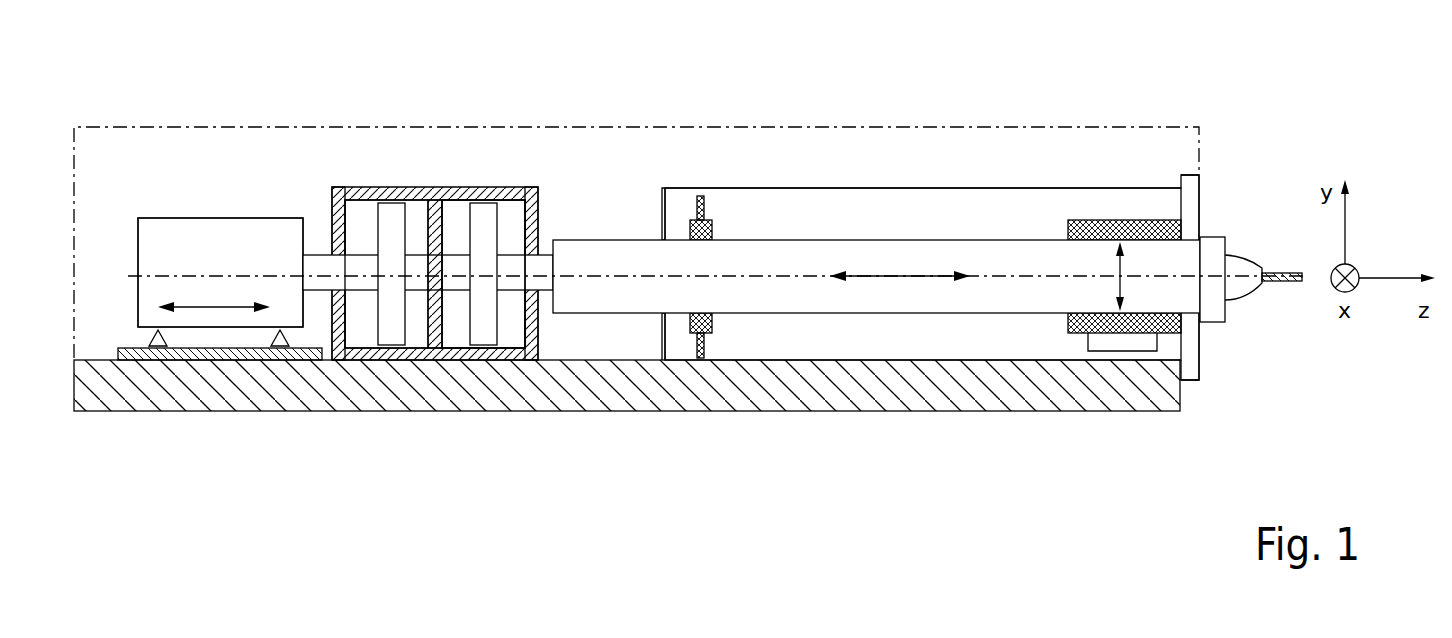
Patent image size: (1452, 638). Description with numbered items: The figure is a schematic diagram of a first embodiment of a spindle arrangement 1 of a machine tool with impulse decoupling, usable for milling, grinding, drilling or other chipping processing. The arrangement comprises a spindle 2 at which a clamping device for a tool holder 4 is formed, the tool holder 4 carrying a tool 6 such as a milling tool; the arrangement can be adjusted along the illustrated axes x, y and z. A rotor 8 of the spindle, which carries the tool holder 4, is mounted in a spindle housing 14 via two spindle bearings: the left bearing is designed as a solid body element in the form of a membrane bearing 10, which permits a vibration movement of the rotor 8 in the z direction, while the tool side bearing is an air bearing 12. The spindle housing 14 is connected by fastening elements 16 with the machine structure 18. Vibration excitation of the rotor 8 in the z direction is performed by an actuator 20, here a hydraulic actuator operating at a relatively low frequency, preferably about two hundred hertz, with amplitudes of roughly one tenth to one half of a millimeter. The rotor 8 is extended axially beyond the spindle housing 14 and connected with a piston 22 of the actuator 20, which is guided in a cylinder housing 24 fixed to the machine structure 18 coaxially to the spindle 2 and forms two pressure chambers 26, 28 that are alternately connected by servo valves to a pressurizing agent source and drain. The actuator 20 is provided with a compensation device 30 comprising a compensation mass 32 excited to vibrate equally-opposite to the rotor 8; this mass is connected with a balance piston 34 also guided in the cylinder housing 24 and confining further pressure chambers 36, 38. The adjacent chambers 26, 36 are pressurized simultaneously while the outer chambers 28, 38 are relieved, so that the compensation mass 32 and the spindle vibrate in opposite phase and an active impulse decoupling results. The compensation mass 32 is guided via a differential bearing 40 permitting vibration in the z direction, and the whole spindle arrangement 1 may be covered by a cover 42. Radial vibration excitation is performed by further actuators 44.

The spindle arrangement 1 is at (622, 118).
The spindle 2 is at (918, 178).
The tool holder 4 is at (1236, 272).
The tool 6 is at (1287, 274).
The rotor 8 is at (1007, 265).
The membrane bearing 10 is at (705, 210).
The air bearing 12 is at (1110, 222).
The spindle housing 14 is at (824, 212).
The fastening elements 16 is at (1135, 362).
The machine structure 18 is at (598, 392).
The actuator 20 is at (437, 175).
The piston 22 is at (484, 222).
The cylinder housing 24 is at (528, 342).
The pressure chamber 26 is at (455, 323).
The pressure chamber 28 is at (538, 350).
The compensation device 30 is at (207, 205).
The compensation mass 32 is at (240, 252).
The balance piston 34 is at (390, 237).
The pressure chamber 36 is at (414, 324).
The pressure chamber 38 is at (356, 324).
The differential bearing 40 is at (153, 350).
The cover 42 is at (160, 127).
The further actuators 44 is at (1112, 342).